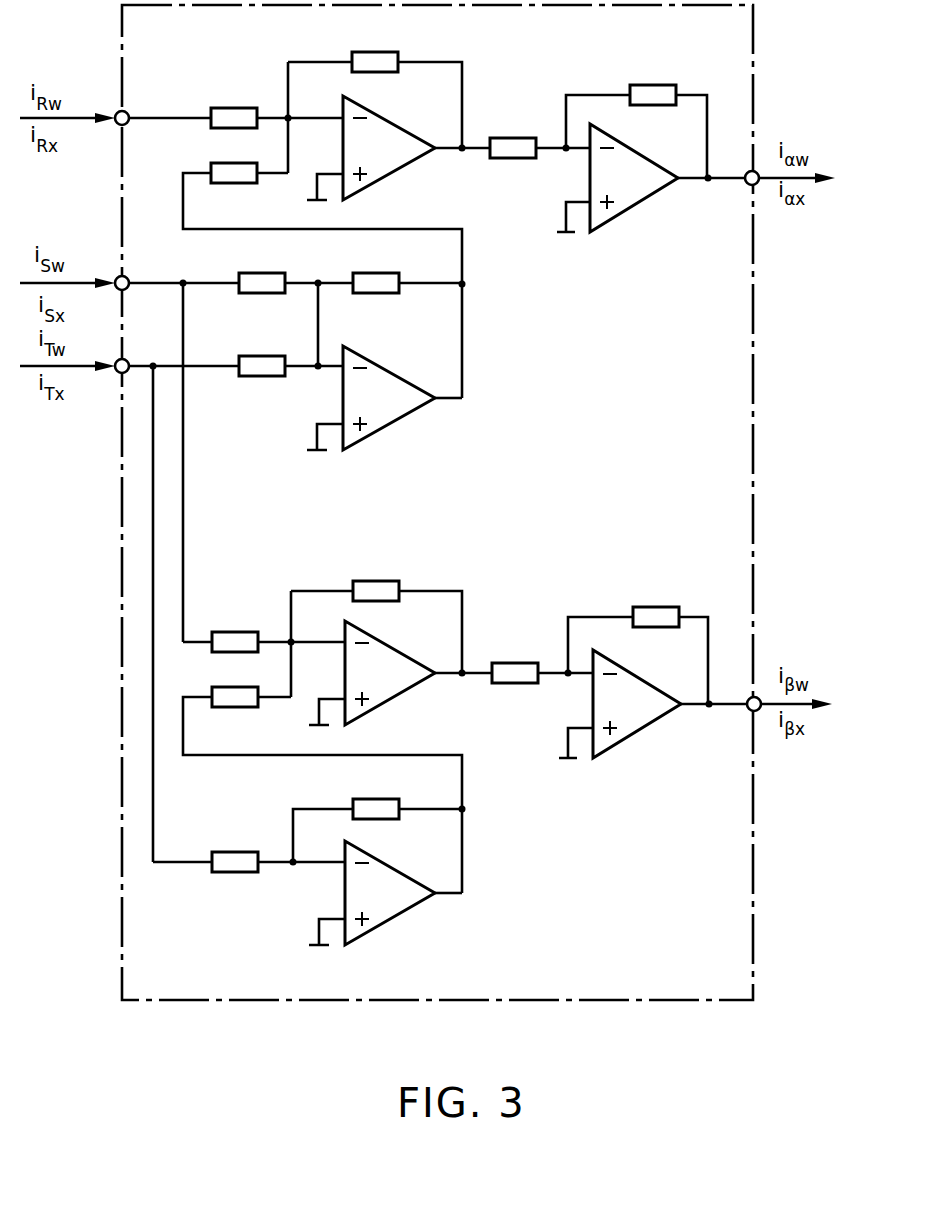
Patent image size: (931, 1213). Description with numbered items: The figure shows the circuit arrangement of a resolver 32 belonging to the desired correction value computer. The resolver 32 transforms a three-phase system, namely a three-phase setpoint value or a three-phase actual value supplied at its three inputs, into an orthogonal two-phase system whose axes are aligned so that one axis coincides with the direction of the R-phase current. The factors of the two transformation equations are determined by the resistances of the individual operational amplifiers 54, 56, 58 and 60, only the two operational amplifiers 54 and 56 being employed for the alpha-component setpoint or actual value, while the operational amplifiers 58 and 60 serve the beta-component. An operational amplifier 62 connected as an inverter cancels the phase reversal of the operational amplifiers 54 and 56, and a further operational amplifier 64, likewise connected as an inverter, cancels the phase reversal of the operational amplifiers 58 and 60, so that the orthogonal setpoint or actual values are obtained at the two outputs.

The resolver 32 is at (290, 1001).
The operational amplifier 54 is at (390, 170).
The operational amplifier 56 is at (393, 422).
The operational amplifier 58 is at (393, 700).
The operational amplifier 60 is at (385, 923).
The operational amplifier 62 is at (632, 206).
The operational amplifier 64 is at (637, 731).